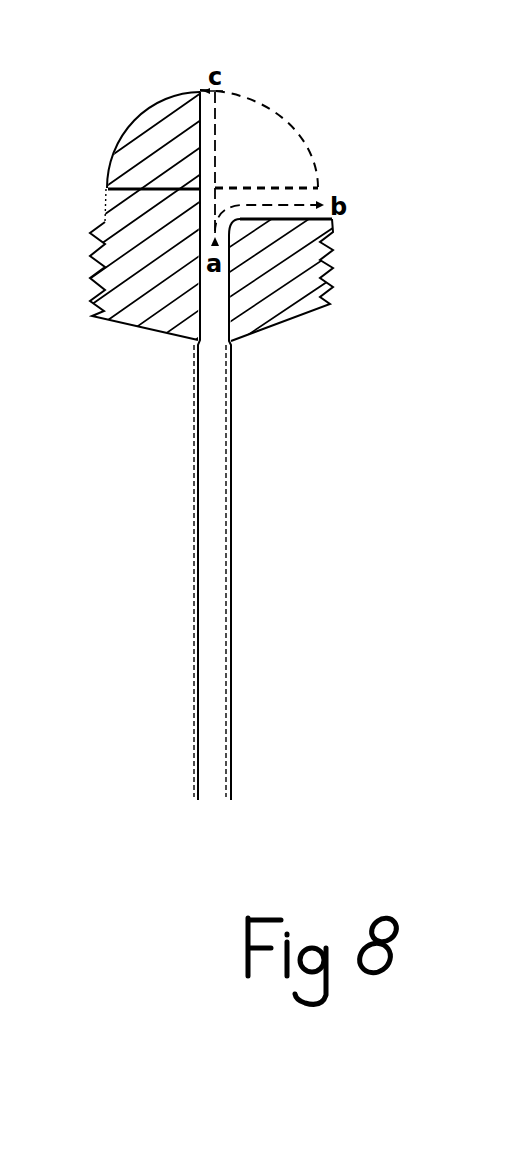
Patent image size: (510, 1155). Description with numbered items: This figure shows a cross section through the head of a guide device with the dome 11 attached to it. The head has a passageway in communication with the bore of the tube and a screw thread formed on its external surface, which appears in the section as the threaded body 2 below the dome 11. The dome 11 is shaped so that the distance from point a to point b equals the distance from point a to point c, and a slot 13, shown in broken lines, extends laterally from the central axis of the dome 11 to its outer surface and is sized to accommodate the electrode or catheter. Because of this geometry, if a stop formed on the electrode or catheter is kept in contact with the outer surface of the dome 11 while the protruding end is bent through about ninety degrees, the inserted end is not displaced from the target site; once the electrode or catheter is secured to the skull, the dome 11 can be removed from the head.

The threaded body / nut cross-section 2 is at (143, 250).
The dome 11 is at (160, 137).
The slot 13 is at (266, 137).